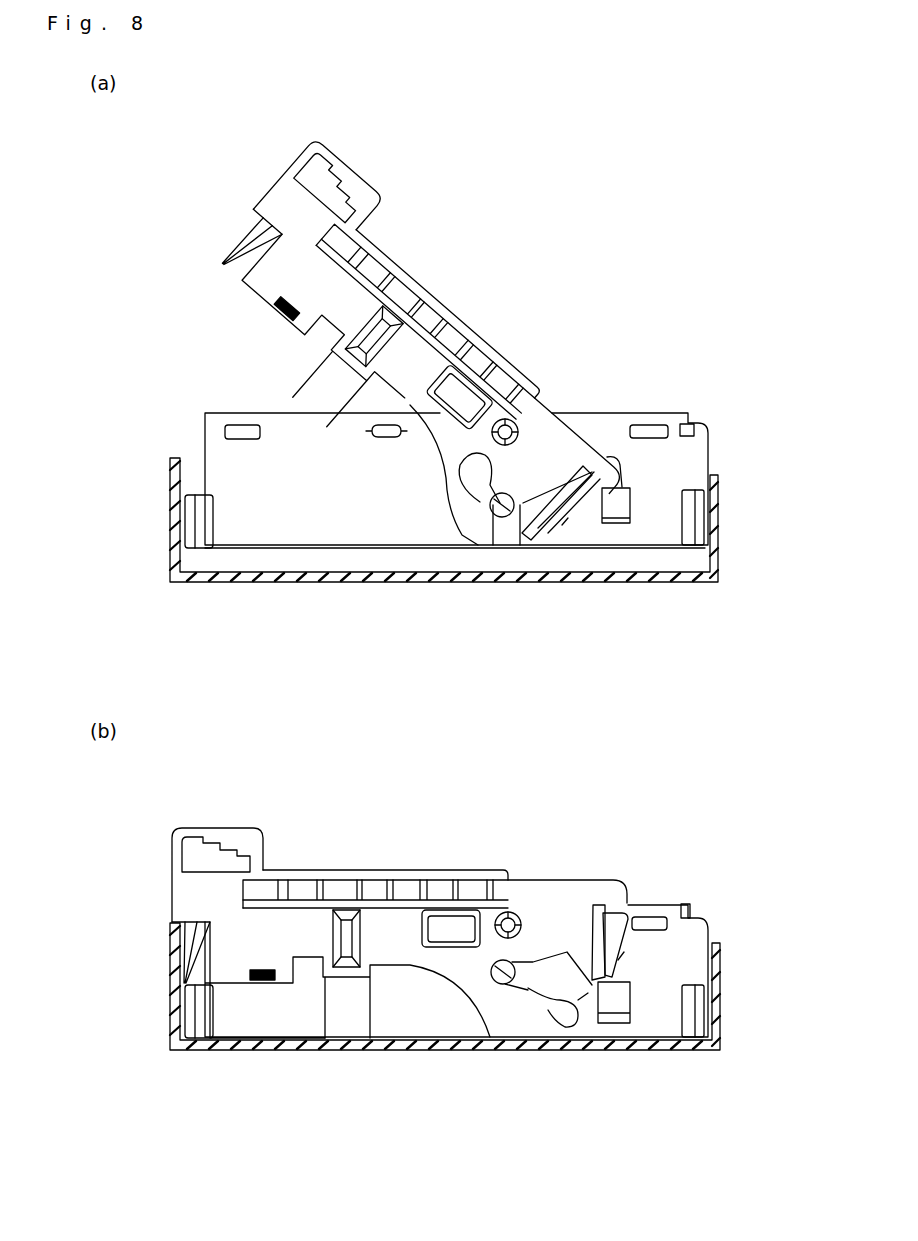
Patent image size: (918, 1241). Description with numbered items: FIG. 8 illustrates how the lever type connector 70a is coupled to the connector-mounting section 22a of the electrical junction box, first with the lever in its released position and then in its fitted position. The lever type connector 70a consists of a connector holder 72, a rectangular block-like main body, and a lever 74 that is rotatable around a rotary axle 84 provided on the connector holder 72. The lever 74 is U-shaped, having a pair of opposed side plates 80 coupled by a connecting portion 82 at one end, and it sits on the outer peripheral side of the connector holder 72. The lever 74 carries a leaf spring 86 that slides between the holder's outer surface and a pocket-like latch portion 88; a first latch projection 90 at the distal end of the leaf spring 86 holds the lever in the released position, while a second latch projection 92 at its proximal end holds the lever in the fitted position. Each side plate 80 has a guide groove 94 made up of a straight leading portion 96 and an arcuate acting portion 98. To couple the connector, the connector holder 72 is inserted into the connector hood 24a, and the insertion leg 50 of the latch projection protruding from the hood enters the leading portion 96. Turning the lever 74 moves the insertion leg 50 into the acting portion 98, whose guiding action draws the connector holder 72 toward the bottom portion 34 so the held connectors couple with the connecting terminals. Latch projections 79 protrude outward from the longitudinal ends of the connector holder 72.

The connector-mounting section for the lever type connector 22a is at (728, 477).
The connector hood 24a is at (718, 512).
The bottom portion 34 is at (336, 583).
The insertion leg 50 is at (508, 516).
The lever type connector 70a is at (638, 370).
The connector holder 72 is at (696, 448).
The lever 74 is at (408, 244).
The latch projection 79 is at (200, 519).
The side plate 80 is at (414, 366).
The connecting portion 82 is at (268, 202).
The rotary axle 84 is at (506, 430).
The leaf spring 86 is at (578, 512).
The latch portion 88 is at (623, 507).
The first latch projection 90 is at (583, 503).
The second latch projection 92 is at (563, 527).
The guide groove 94 is at (487, 618).
The leading portion 96 is at (503, 524).
The acting portion 98 is at (478, 502).